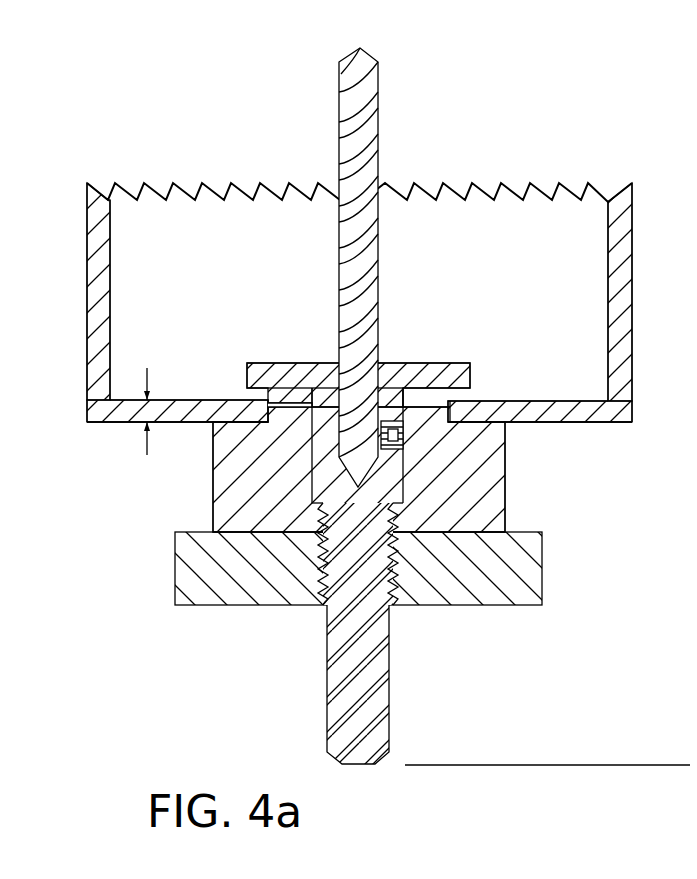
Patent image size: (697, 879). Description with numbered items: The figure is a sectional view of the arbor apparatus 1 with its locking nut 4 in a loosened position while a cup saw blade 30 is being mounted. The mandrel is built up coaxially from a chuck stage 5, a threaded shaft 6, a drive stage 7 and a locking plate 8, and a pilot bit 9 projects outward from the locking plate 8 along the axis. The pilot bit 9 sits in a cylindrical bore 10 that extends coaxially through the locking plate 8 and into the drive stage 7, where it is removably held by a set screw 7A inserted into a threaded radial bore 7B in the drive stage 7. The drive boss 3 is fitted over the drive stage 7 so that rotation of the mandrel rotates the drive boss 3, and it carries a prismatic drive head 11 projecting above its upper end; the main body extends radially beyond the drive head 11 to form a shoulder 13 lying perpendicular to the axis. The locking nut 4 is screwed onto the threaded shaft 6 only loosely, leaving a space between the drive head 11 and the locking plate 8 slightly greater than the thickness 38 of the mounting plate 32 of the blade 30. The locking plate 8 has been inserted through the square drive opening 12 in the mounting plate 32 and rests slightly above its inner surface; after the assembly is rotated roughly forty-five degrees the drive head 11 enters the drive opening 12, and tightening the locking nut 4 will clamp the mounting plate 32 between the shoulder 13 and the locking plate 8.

The arbor apparatus 1 is at (152, 684).
The drive boss 3 is at (492, 490).
The locking nut 4 is at (545, 578).
The chuck stage 5 is at (390, 678).
The threaded shaft 6 is at (358, 578).
The drive stage 7 is at (327, 453).
The set screw 7A is at (384, 420).
The threaded radial bore 7B is at (393, 435).
The locking plate 8 is at (292, 363).
The pilot bit 9 is at (365, 100).
The cylindrical bore 10 is at (367, 380).
The drive head 11 is at (430, 405).
The drive opening 12 is at (287, 403).
The shoulder 13 is at (492, 422).
The cup saw blade 30 is at (607, 200).
The mounting plate 32 is at (600, 424).
The thickness 38 is at (145, 440).